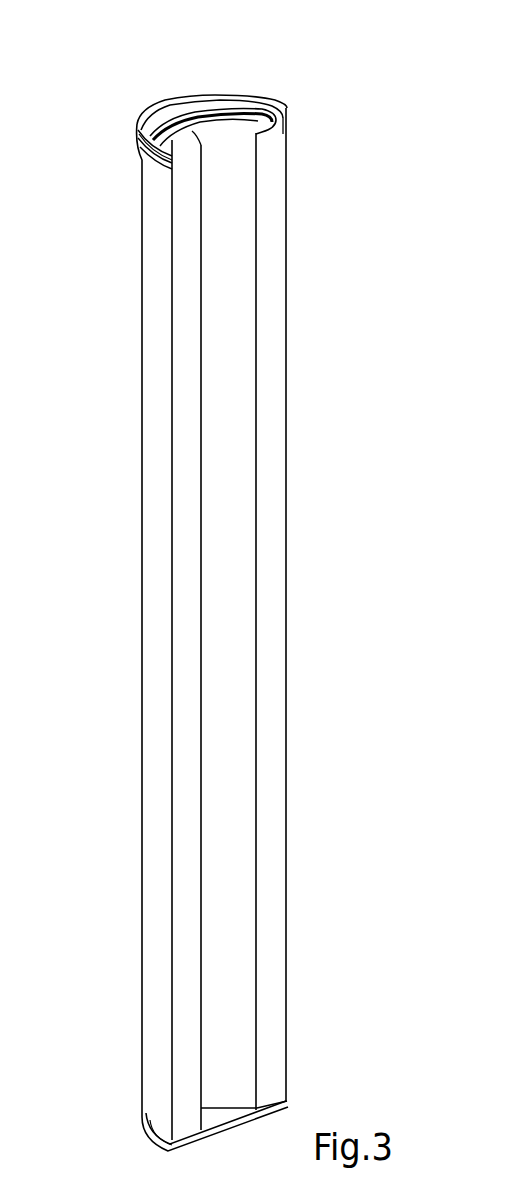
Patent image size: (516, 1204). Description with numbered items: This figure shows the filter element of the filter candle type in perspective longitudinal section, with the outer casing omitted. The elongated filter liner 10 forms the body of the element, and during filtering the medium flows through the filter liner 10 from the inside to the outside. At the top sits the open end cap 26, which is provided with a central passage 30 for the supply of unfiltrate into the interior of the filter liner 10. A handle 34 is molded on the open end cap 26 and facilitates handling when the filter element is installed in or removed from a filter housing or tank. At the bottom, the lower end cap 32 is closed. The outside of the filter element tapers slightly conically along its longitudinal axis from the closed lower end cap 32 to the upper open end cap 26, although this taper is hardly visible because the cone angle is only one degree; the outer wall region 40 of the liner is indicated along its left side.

The filter liner 10 is at (275, 355).
The end cap 26 is at (135, 123).
The central passage 30 is at (240, 137).
The lower end cap 32 is at (257, 1127).
The handle 34 is at (243, 103).
The outer wall 40 is at (142, 485).